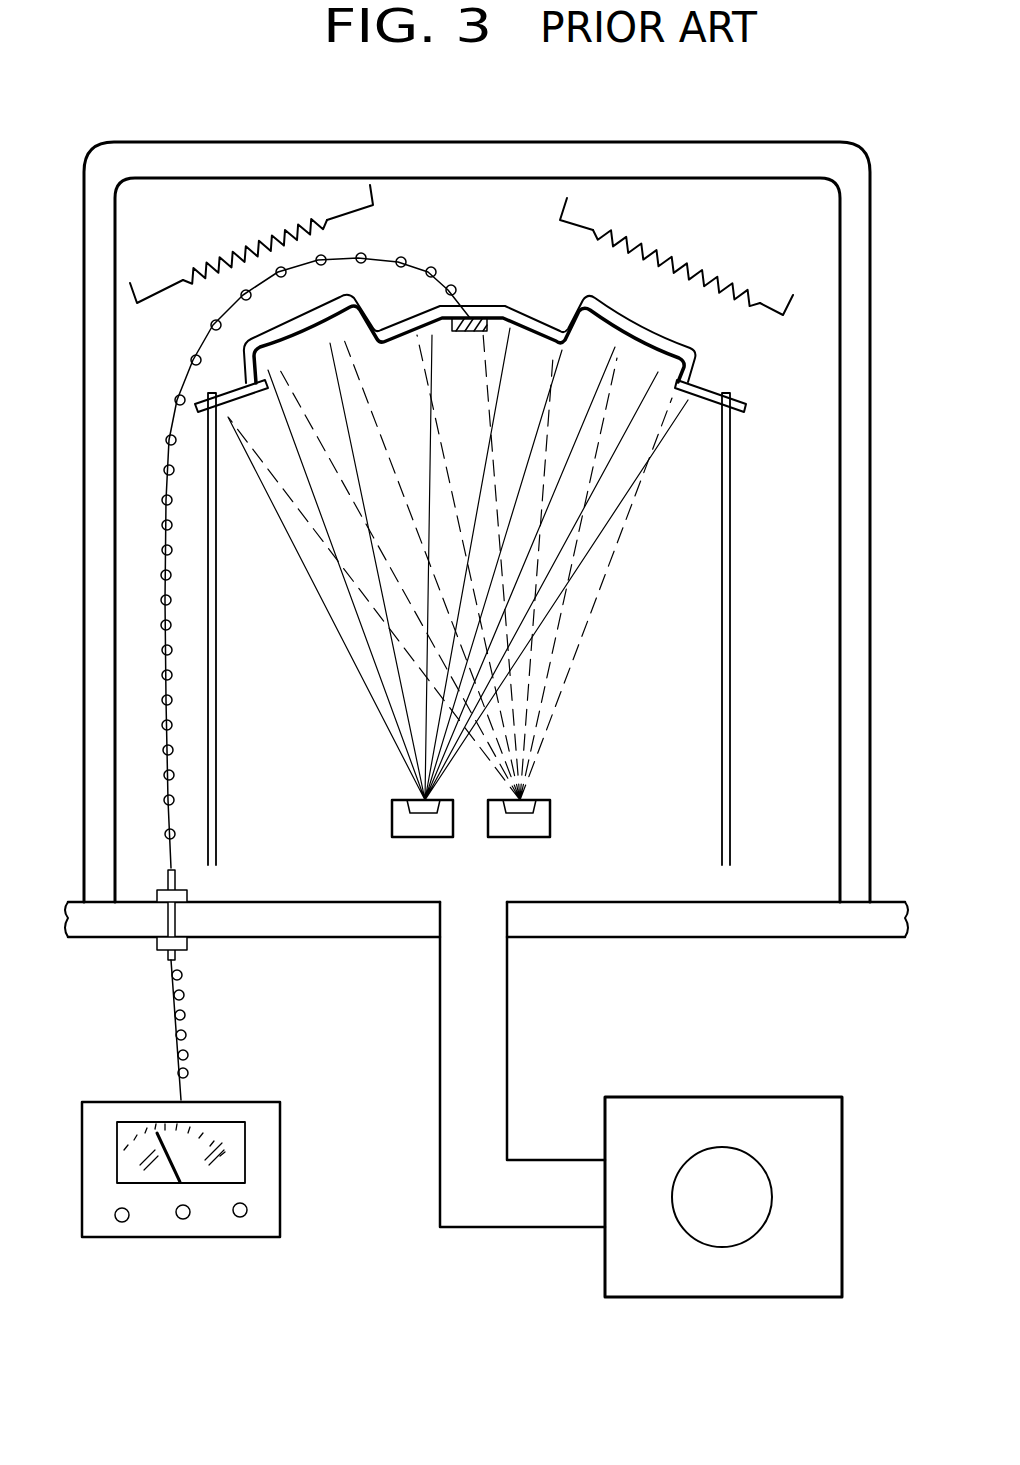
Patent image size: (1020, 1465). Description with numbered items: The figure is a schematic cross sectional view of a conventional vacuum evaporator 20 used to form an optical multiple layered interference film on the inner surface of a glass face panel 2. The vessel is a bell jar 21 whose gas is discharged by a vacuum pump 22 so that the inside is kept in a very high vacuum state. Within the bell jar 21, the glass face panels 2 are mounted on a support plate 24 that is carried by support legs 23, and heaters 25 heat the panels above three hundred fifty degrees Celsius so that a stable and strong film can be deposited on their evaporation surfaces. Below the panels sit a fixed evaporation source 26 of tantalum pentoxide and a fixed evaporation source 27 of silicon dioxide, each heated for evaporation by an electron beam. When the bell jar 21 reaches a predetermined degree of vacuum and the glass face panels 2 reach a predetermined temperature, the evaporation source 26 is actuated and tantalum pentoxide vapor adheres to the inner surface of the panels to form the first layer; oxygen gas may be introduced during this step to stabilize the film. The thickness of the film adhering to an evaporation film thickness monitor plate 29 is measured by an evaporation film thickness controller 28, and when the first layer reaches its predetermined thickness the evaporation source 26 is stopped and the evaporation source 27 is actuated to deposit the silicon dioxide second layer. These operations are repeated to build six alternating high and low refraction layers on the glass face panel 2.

The glass face panel 2 is at (293, 325).
The vacuum evaporator 20 is at (480, 143).
The bell jar 21 is at (858, 470).
The vacuum pump 22 is at (723, 1108).
The support leg 23 is at (733, 580).
The support plate 24 is at (713, 388).
The heater 25 is at (228, 253).
The evaporation source of tantalum pentoxide 26 is at (425, 830).
The evaporation source of silicon dioxide 27 is at (530, 830).
The evaporation film thickness controller 28 is at (281, 1143).
The evaporation film thickness monitor plate 29 is at (470, 332).